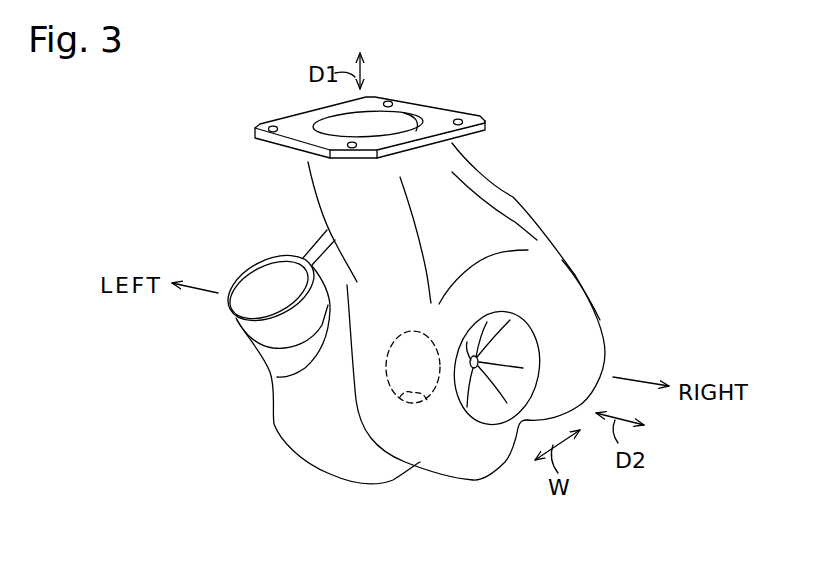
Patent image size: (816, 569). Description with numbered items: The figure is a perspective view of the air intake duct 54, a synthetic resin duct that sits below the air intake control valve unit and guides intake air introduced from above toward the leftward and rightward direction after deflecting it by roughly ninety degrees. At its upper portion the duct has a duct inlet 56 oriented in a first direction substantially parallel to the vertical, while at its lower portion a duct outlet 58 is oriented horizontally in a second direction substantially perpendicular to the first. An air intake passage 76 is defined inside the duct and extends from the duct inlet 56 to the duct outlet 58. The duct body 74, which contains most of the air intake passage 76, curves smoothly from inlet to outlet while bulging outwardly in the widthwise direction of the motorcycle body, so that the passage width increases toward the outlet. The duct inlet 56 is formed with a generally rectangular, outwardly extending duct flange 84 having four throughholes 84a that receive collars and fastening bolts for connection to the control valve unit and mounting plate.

The air intake duct 54 is at (565, 236).
The duct inlet 56 is at (408, 117).
The duct outlet 58 is at (421, 401).
The duct body 74 is at (585, 323).
The air intake passage 76 is at (450, 240).
The duct flange 84 is at (443, 115).
The throughholes 84a is at (389, 101).